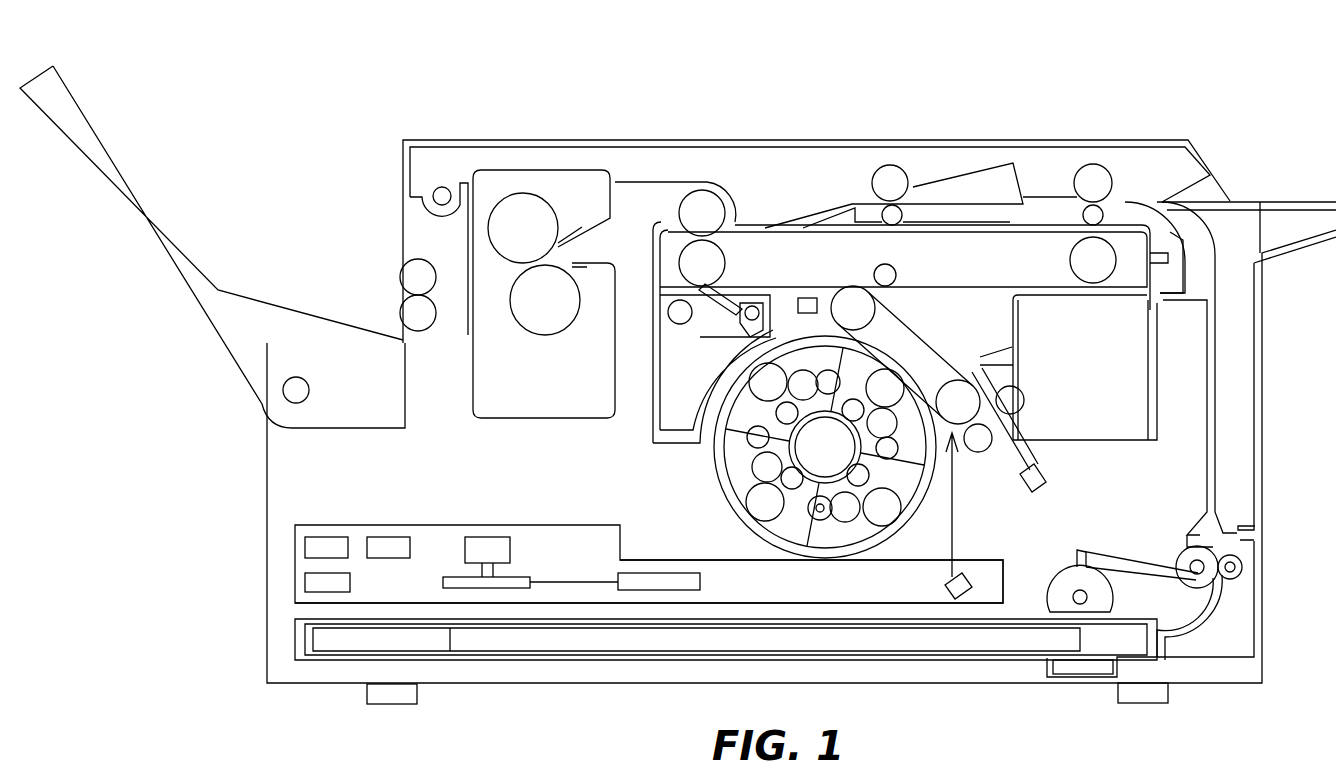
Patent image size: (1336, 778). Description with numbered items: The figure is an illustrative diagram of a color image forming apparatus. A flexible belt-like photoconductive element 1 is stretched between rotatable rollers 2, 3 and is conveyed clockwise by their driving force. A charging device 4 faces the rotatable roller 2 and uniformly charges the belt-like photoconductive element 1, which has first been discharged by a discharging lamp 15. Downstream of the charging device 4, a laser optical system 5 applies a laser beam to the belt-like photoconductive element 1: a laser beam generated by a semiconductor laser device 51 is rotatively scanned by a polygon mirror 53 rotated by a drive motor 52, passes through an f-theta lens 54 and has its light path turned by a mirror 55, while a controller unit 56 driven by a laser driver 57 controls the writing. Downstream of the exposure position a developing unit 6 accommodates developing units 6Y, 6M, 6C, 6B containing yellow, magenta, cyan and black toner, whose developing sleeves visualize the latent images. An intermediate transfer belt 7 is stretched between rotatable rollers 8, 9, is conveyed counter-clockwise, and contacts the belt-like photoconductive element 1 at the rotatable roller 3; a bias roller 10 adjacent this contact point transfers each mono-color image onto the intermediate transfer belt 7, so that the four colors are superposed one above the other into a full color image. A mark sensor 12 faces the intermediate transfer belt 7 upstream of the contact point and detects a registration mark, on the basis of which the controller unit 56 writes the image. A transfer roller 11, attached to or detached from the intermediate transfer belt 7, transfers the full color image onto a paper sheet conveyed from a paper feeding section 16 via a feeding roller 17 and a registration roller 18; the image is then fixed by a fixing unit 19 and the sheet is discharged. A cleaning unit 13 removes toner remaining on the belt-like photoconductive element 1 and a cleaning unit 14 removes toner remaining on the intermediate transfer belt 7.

The belt-like photoconductive element 1 is at (918, 334).
The rotatable roller 2 is at (958, 382).
The rotatable roller 3 is at (873, 302).
The charging device 4 is at (983, 446).
The laser optical system 5 is at (905, 603).
The developing unit 6 is at (838, 448).
The developing unit 6B is at (763, 375).
The developing unit 6C is at (750, 508).
The developing unit 6M is at (893, 513).
The developing unit 6Y is at (895, 453).
The intermediate transfer belt 7 is at (840, 237).
The rotatable roller 8 is at (725, 263).
The rotatable roller 9 is at (1092, 280).
The bias roller 10 is at (897, 272).
The transfer roller 11 is at (712, 197).
The mark sensor 12 is at (812, 298).
The cleaning unit 13 is at (1118, 430).
The cleaning unit 14 is at (683, 415).
The discharging lamp 15 is at (1047, 482).
The paper feeding section 16 is at (1025, 650).
The feeding roller 17 is at (1090, 577).
The registration roller 18 is at (890, 168).
The fixing unit 19 is at (532, 217).
The semiconductor laser device 51 is at (315, 582).
The drive motor 52 is at (483, 545).
The polygon mirror 53 is at (500, 588).
The f-theta lens 54 is at (668, 590).
The mirror 55 is at (960, 578).
The controller unit 56 is at (327, 542).
The laser driver 57 is at (385, 540).